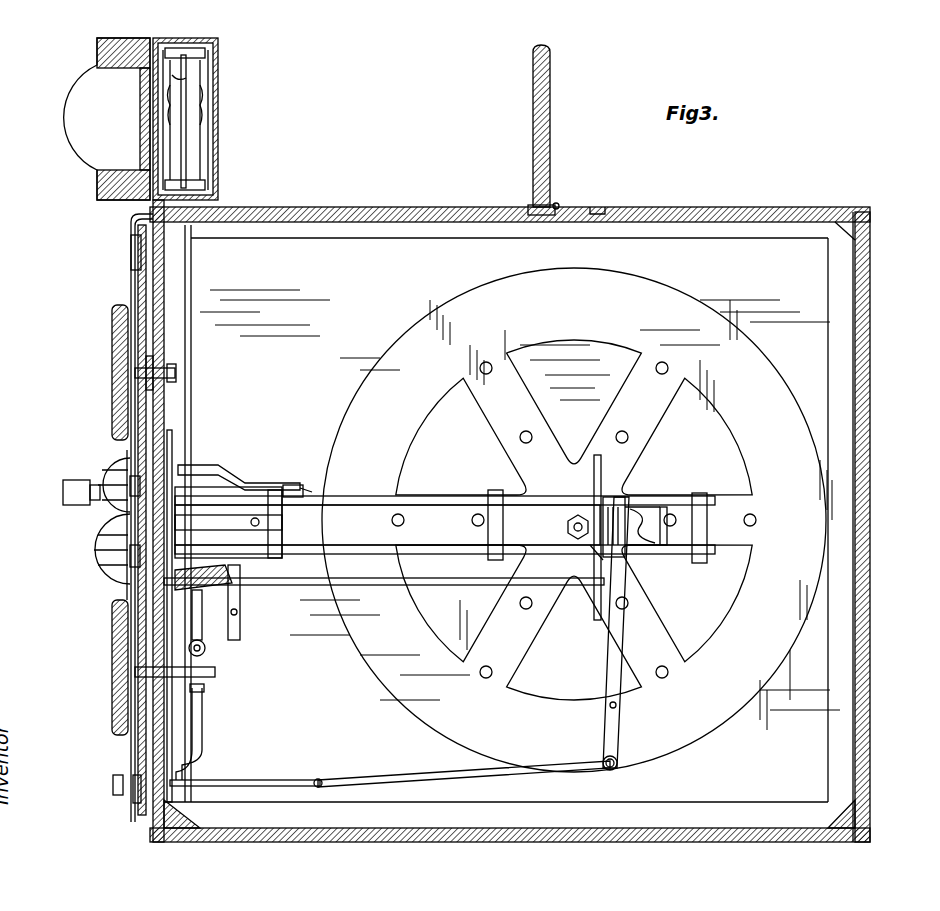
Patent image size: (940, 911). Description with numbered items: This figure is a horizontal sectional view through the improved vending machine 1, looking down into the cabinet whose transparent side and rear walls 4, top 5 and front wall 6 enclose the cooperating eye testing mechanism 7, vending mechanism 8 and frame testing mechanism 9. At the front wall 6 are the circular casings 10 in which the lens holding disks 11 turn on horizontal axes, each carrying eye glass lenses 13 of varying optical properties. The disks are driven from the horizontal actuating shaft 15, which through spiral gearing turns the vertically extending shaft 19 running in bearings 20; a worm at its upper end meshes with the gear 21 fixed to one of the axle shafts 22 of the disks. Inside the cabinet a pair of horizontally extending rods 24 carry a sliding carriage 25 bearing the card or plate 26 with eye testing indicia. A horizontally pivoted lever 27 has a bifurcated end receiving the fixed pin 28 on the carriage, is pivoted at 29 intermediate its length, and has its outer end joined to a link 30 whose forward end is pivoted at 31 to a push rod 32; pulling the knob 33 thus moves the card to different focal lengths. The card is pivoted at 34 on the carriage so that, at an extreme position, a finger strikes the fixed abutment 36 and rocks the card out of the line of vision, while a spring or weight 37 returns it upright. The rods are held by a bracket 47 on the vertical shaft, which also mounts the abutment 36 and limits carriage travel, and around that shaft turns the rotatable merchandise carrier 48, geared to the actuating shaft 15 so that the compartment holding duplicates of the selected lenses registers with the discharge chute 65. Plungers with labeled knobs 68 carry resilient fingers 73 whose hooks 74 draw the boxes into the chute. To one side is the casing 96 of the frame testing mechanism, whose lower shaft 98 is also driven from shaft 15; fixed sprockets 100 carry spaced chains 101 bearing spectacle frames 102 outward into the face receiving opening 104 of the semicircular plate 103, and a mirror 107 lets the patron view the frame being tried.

The vending machine 1 is at (696, 207).
The transparent side and rear walls 4 is at (445, 222).
The top 5 is at (870, 525).
The front wall 6 is at (128, 596).
The eye testing mechanism 7 is at (100, 528).
The vending mechanism 8 is at (332, 412).
The frame testing mechanism 9 is at (220, 133).
The circular casings 10 is at (131, 272).
The lens holding disks 11 is at (139, 290).
The eye glass lenses 13 is at (130, 255).
The actuating shaft 15 is at (300, 586).
The vertically extending shaft 19 is at (240, 622).
The bearings 20 is at (206, 648).
The gear 21 is at (204, 695).
The axle shafts 22 is at (215, 672).
The horizontally extending rods 24 is at (438, 518).
The carriage 25 is at (612, 508).
The card or plate 26 is at (577, 470).
The horizontally pivoted lever 27 is at (622, 600).
The fixed pin 28 is at (628, 548).
The pivot 29 is at (642, 736).
The link 30 is at (492, 770).
The pivot 31 is at (318, 779).
The push rod 32 is at (238, 780).
The knob 33 is at (118, 790).
The pivot 34 is at (592, 556).
The fixed abutment 36 is at (690, 530).
The spring or weight 37 is at (690, 520).
The bracket 47 is at (550, 524).
The rotatable merchandise carrier 48 is at (815, 590).
The discharge chute 65 is at (288, 485).
The knobs 68 is at (66, 498).
The resilient fingers 73 is at (248, 462).
The hooks 74 is at (302, 489).
The casing 96 is at (212, 98).
The lower shaft 98 is at (192, 314).
The fixed sprockets 100 is at (230, 72).
The chains 101 is at (206, 52).
The spectacle frames 102 is at (162, 100).
The semicircular plate 103 is at (97, 46).
The face receiving opening 104 is at (118, 142).
The mirror 107 is at (533, 108).